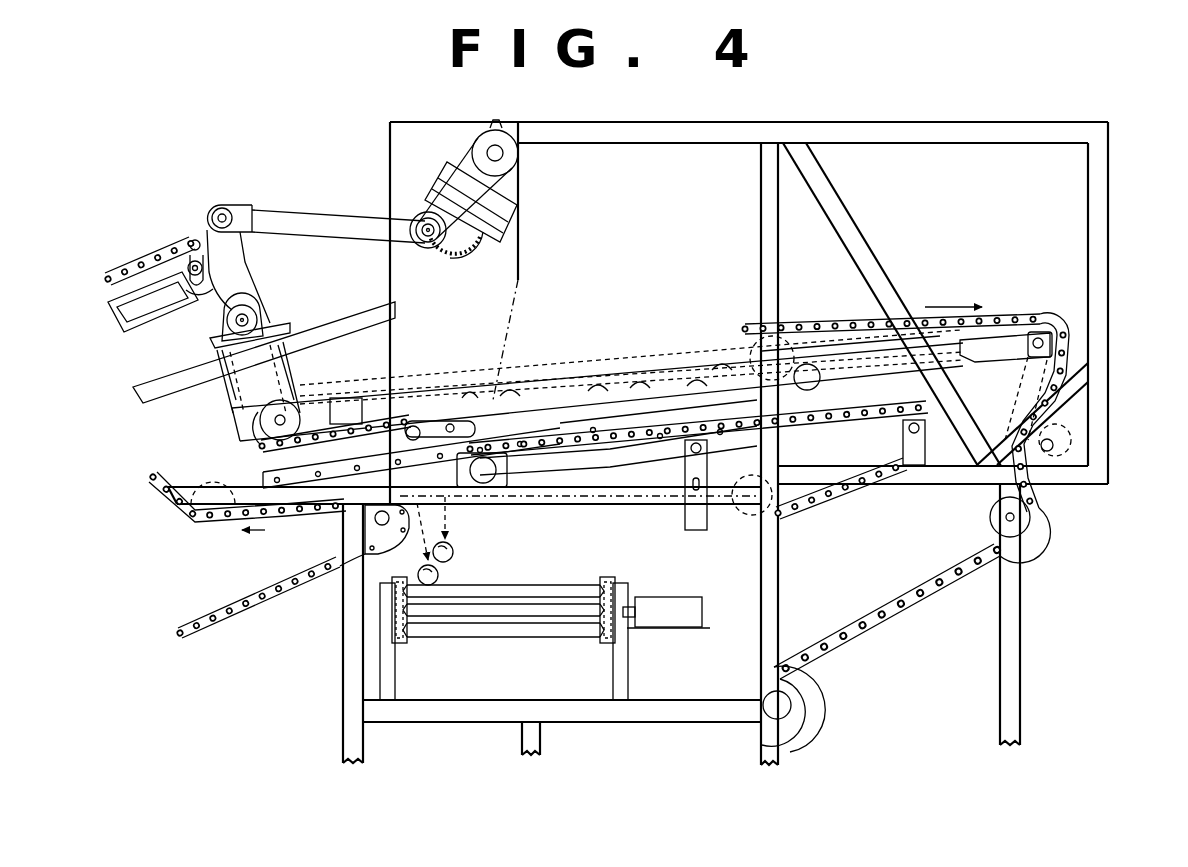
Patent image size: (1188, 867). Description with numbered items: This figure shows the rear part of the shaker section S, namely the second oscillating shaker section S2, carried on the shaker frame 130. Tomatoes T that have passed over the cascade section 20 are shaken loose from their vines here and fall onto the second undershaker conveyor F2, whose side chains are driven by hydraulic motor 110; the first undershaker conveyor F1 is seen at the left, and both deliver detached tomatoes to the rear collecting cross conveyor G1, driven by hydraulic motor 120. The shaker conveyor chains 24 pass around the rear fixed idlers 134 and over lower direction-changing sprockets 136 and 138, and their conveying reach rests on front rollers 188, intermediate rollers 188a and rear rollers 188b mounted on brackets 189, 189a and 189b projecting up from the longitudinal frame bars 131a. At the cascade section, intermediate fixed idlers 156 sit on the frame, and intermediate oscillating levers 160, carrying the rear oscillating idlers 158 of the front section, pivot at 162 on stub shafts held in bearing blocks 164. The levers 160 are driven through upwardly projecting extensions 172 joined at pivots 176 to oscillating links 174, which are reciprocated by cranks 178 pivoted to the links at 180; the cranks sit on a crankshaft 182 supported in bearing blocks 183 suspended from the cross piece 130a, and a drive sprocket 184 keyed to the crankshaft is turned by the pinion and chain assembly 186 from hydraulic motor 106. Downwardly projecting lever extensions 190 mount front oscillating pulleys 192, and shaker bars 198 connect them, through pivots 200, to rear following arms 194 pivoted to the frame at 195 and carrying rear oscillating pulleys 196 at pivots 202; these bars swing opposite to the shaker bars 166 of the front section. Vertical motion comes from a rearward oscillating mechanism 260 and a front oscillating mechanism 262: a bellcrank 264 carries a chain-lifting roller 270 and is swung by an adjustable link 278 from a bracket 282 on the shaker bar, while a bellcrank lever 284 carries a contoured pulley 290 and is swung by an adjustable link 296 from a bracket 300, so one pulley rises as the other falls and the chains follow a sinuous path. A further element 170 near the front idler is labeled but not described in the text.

The shaker section S is at (164, 194).
The upwardly projecting extensions 172 is at (218, 208).
The pivots 176 is at (226, 212).
The oscillating links 174 is at (306, 215).
The sprocket 170 is at (196, 260).
The rear oscillating idlers 158 is at (170, 254).
The shaker conveyor chains 24 is at (116, 271).
The intermediate oscillating levers 160 is at (241, 251).
The cascade section 20 is at (274, 291).
The pivots 162 is at (262, 313).
The bearing blocks 164 is at (222, 315).
The intermediate fixed idlers 156 is at (214, 340).
The longitudinal shaker bars 166 is at (121, 324).
The intermediate oscillating levers 190 is at (271, 367).
The front oscillating pulleys 192 is at (276, 383).
The hydraulic motor 106 is at (516, 158).
The pinion and chain assembly 186 is at (512, 178).
The cross piece 130a is at (520, 198).
The drive sprocket 184 is at (440, 216).
The crankshaft 182 is at (476, 244).
The pivots 180 is at (427, 242).
The bearing blocks 183 is at (446, 262).
The cranks 178 is at (463, 252).
The second oscillating shaker section S2 is at (661, 318).
The front oscillating mechanism 262 is at (428, 410).
The bracket 300 is at (412, 390).
The brackets 189 is at (470, 398).
The front rollers 188 is at (510, 397).
The shaker bars 198 is at (565, 380).
The intermediate rollers 188a is at (598, 392).
The brackets 189a is at (641, 388).
The brackets 189b is at (697, 388).
The rear rollers 188b is at (722, 368).
The rearward oscillating mechanism 260 is at (806, 344).
The chain raising and lowering roller 270 is at (796, 336).
The bracket 282 is at (912, 313).
The rear oscillating pulleys 196 is at (1029, 330).
The pivots 202 is at (1041, 338).
The rear oscillator following arms 194 is at (1053, 387).
The rear fixed idlers 134 is at (1070, 440).
The pivot 195 is at (1049, 451).
The lower idler 136 is at (999, 526).
The lower idler 138 is at (800, 703).
The second undershaker conveyor F2 is at (851, 493).
The adjustable link 278 is at (816, 416).
The bellcrank 264 is at (778, 400).
The pivots 200 is at (275, 421).
The contoured pulley 290 is at (393, 443).
The adjustable oscillating link 296 is at (446, 463).
The bellcrank lever 284 is at (465, 434).
The hydraulic motor 110 is at (485, 484).
The longitudinal bars 131a is at (572, 452).
The first undershaker conveyor F1 is at (246, 597).
The tomatoes T is at (453, 556).
The rear collecting cross conveyor G1 is at (531, 629).
The hydraulic motor 120 is at (651, 622).
The shaker frame 130 is at (780, 580).